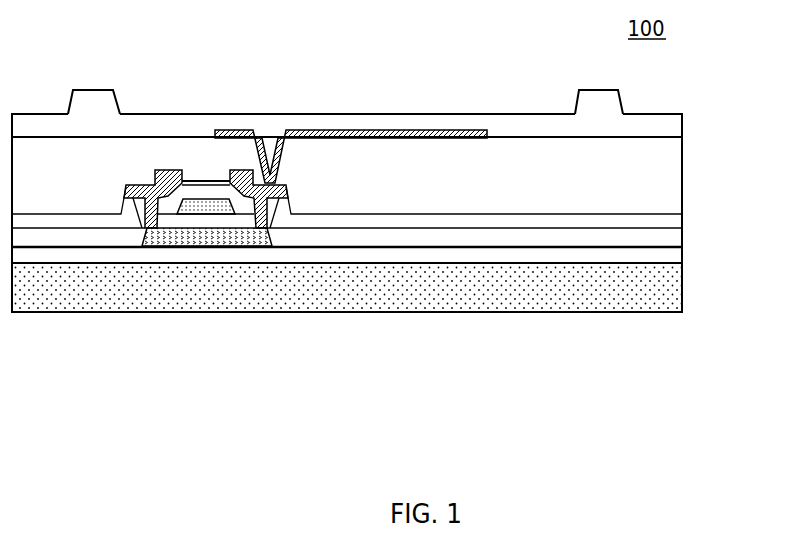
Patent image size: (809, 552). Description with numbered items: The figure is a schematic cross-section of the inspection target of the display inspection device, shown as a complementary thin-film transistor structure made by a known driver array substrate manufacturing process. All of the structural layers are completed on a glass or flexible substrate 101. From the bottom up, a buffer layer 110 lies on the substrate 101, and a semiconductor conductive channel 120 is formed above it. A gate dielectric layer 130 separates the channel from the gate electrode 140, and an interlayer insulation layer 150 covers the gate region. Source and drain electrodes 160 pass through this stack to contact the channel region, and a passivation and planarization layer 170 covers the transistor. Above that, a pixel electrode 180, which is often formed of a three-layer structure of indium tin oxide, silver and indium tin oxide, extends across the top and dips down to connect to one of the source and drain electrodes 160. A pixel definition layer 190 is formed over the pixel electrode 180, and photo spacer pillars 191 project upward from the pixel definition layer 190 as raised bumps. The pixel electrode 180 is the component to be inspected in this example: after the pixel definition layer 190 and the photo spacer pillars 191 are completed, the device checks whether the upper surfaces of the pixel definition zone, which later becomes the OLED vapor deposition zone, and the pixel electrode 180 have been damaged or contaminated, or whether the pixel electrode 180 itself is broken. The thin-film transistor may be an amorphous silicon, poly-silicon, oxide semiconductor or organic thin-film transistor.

The substrate 101 is at (662, 300).
The buffer layer 110 is at (662, 260).
The semiconductor conductive channel 120 is at (193, 238).
The gate dielectric layer 130 is at (662, 243).
The gate electrode 140 is at (223, 208).
The interlayer insulation layer 150 is at (662, 223).
The source and drain electrodes 160 is at (136, 200).
The passivation and planarization layer 170 is at (660, 179).
The pixel electrode 180 is at (225, 130).
The pixel definition layer 190 is at (660, 125).
The photo spacer pillars 191 is at (84, 103).